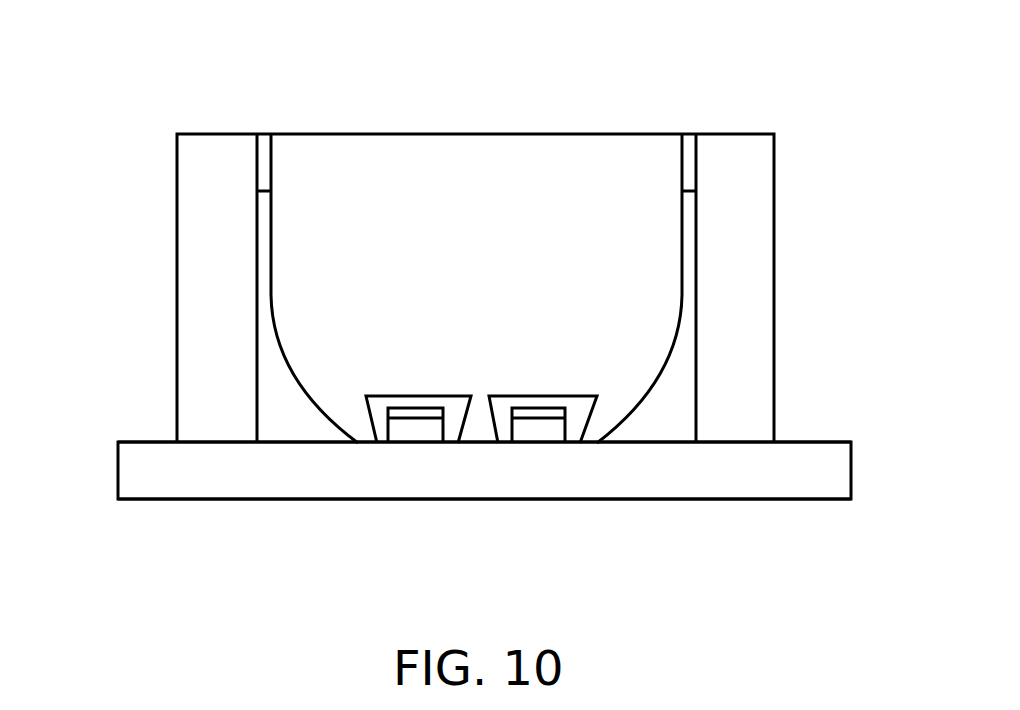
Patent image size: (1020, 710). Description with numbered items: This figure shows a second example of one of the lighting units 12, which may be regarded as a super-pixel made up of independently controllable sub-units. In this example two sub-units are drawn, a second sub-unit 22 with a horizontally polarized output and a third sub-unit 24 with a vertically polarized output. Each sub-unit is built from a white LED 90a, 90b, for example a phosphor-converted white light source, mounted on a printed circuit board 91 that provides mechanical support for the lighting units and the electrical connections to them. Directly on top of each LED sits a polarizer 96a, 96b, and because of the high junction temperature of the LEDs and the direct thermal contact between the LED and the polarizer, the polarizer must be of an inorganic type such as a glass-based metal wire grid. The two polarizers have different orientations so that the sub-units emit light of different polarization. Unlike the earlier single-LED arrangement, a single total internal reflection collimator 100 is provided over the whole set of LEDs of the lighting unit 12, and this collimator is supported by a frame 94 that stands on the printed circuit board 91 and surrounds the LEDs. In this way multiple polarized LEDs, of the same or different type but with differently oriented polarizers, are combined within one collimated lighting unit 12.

The lighting unit 12 is at (140, 117).
The total internal reflection collimator 100 is at (317, 230).
The frame 94 is at (748, 277).
The polarizer 96a is at (415, 405).
The polarizer 96b is at (568, 412).
The white LED 90a is at (418, 432).
The white LED 90b is at (535, 432).
The printed circuit board 91 is at (615, 471).
The second sub-unit 22 is at (352, 515).
The third sub-unit 24 is at (547, 518).